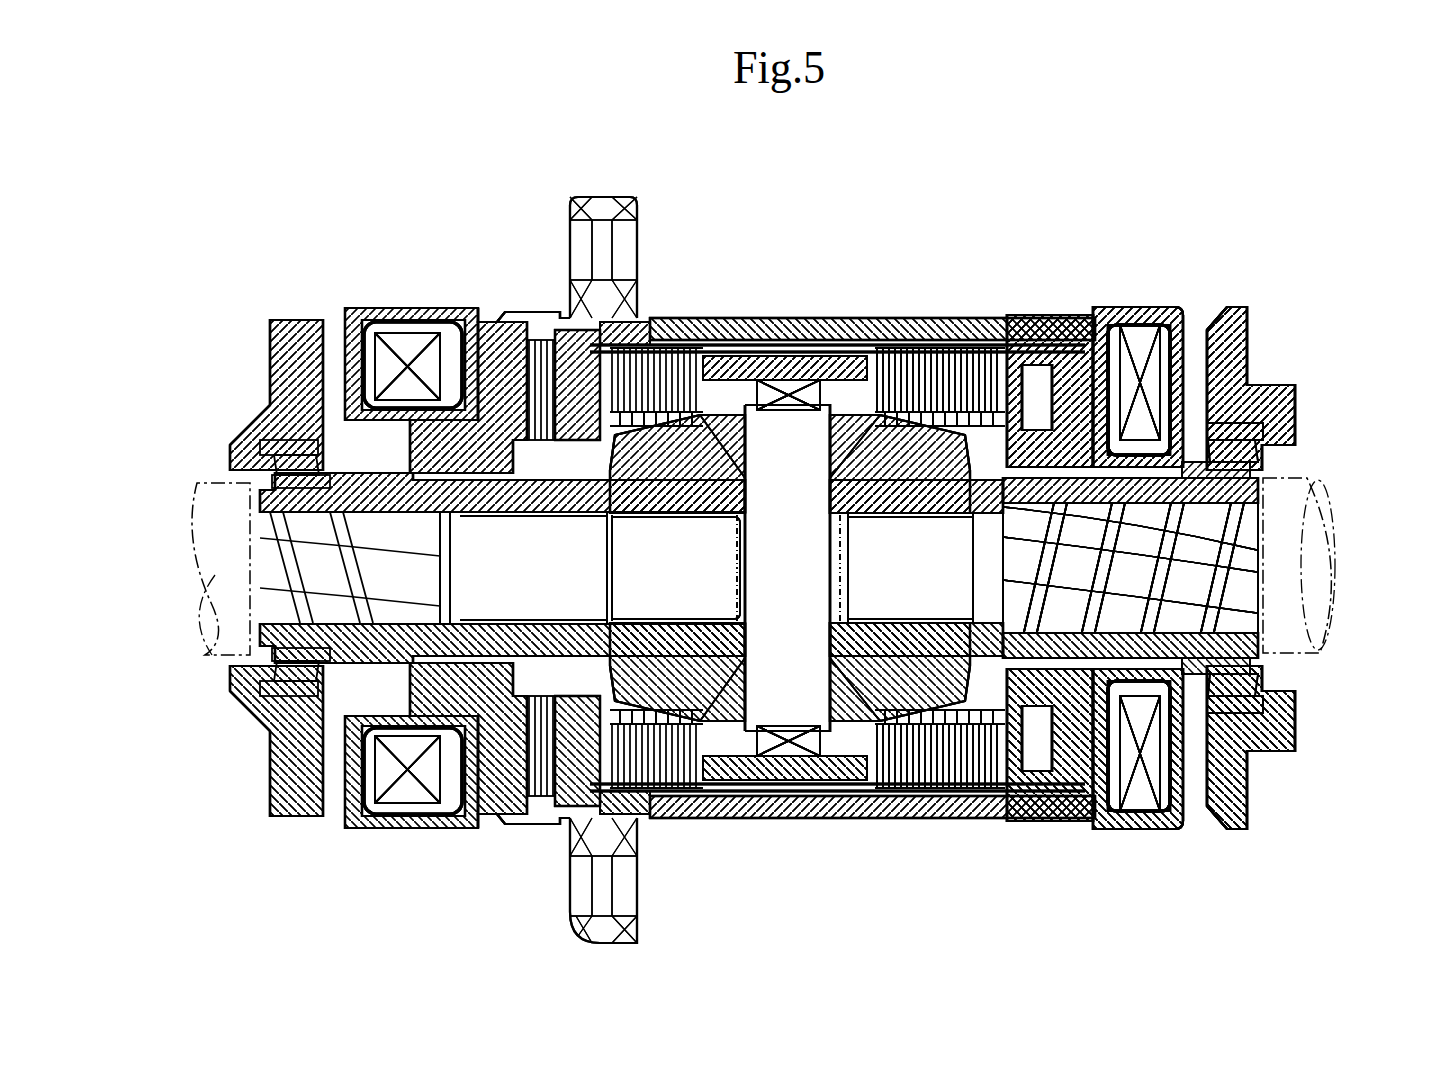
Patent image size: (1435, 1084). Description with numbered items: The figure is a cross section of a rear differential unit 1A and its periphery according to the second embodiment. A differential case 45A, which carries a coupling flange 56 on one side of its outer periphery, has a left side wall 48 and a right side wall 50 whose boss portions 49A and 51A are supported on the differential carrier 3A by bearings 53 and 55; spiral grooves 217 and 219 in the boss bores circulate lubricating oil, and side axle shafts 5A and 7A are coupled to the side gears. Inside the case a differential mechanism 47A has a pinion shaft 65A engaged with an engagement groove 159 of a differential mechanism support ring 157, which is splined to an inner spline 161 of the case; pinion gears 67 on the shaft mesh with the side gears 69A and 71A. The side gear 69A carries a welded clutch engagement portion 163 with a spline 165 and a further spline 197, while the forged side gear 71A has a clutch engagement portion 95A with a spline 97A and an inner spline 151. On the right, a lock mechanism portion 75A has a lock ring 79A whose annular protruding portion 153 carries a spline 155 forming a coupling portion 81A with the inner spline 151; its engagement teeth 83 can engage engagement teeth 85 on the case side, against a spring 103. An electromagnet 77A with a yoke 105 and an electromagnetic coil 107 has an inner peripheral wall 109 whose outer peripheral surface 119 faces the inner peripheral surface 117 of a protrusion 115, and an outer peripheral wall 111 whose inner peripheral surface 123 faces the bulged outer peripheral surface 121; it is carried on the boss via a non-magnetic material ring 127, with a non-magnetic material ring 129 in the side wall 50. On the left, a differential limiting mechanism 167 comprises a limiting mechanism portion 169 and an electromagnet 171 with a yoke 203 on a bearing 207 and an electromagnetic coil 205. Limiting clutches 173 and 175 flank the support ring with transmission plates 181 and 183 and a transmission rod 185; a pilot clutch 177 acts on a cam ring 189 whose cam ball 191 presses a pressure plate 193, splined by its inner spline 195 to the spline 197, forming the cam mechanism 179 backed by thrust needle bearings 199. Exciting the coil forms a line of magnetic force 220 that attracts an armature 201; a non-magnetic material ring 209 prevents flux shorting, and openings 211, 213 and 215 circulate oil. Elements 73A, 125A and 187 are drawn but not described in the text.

The coupling flange 56 is at (603, 205).
The differential limiting mechanism 167 is at (597, 330).
The limiting mechanism portion 169 is at (640, 335).
The limiting clutch 173 is at (657, 345).
The differential mechanism support ring 157 is at (682, 380).
The opening 213 is at (727, 380).
The pinion shaft 65A is at (822, 343).
The differential mechanism 47A is at (800, 380).
The differential case 45A is at (893, 345).
The limiting clutch 175 is at (908, 385).
The rear differential unit 1A is at (1006, 302).
The lock mechanism portion 75A is at (1028, 312).
The spline 97A is at (1032, 360).
The lock ring 79A is at (1043, 330).
The engagement teeth 83 is at (1060, 322).
The engagement teeth 85 is at (1075, 368).
The electromagnet 77A is at (1139, 287).
The cover 73A is at (1183, 305).
The outer peripheral wall 111 is at (1176, 287).
The yoke 105 is at (1205, 330).
The electromagnetic coil 107 is at (1222, 317).
The differential carrier 3A is at (1262, 326).
The line of magnetic force 220 is at (350, 330).
The yoke 203 is at (372, 360).
The side wall 48 is at (425, 380).
The pilot clutch 177 is at (500, 330).
The armature 201 is at (560, 330).
The opening 215 is at (535, 340).
The engagement groove 159 is at (736, 385).
The inner spline 161 is at (845, 385).
The clutch engagement portion 95A is at (960, 348).
The electromagnet 171 is at (285, 330).
The electromagnetic coil 205 is at (332, 350).
The bearing 207 is at (290, 400).
The bearing 53 is at (245, 430).
The side axle shaft 5A is at (205, 480).
The boss portion 49A is at (268, 498).
The spiral groove 217 is at (297, 593).
The side wall 50 is at (1285, 370).
The non-magnetic material ring 127 is at (1195, 410).
The bearing 55 is at (1290, 430).
The boss portion 51A is at (1240, 450).
The side axle shaft 7A is at (1330, 490).
The inner peripheral wall 109 is at (1260, 515).
The spring 103 is at (1240, 530).
The annular protruding portion 153 is at (1245, 560).
The coupling portion 81A is at (1220, 580).
The spiral groove 219 is at (1230, 605).
The inner peripheral surface 117 is at (1240, 665).
The protrusion 115 is at (1200, 700).
The outer peripheral surface 119 is at (1250, 740).
The wall 125A is at (1240, 785).
The non-magnetic material ring 129 is at (1160, 790).
The outer peripheral surface 121 is at (1080, 780).
The inner peripheral surface 123 is at (1110, 790).
The transmission rod 185 is at (1005, 785).
The drum 187 is at (840, 790).
The transmission plate 183 is at (870, 790).
The transmission plate 181 is at (700, 790).
The opening 211 is at (545, 800).
The non-magnetic material ring 209 is at (500, 790).
The thrust needle bearing 199 is at (470, 660).
The inner spline 195 is at (555, 690).
The spline 197 is at (590, 700).
The pressure plate 193 is at (600, 455).
The cam ball 191 is at (560, 455).
The cam ring 189 is at (505, 462).
The cam mechanism 179 is at (470, 470).
The clutch engagement portion 163 is at (640, 430).
The spline 165 is at (625, 690).
The side gear 69A is at (675, 520).
The pinion gear 67 is at (760, 450).
The side gear 71A is at (870, 500).
The spline 155 is at (960, 460).
The inner spline 151 is at (940, 470).